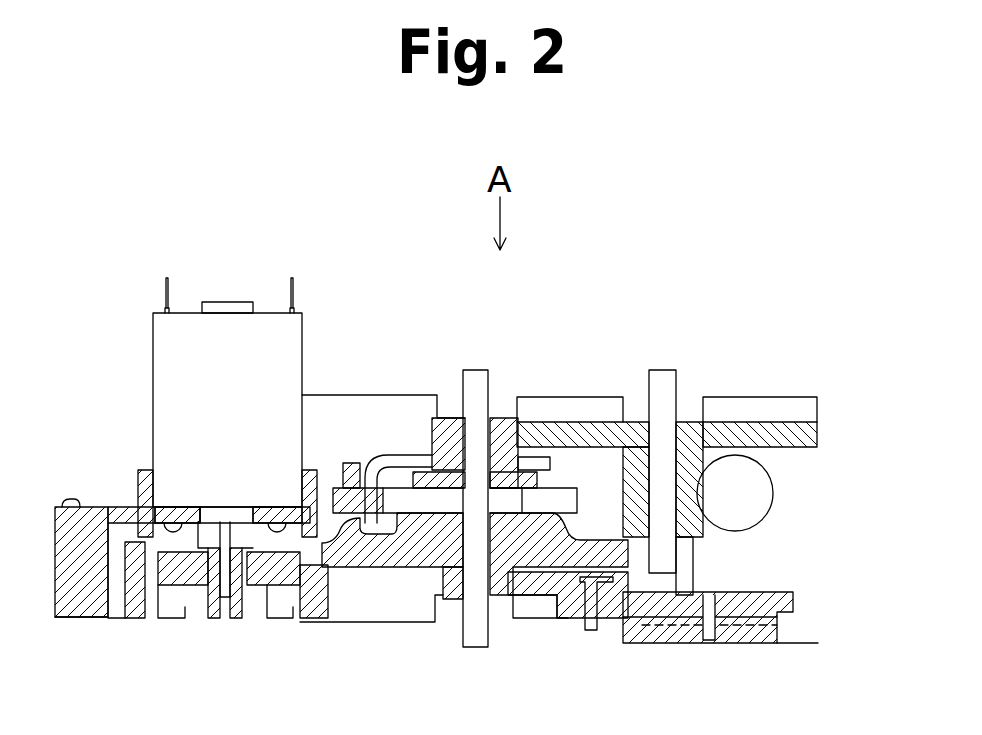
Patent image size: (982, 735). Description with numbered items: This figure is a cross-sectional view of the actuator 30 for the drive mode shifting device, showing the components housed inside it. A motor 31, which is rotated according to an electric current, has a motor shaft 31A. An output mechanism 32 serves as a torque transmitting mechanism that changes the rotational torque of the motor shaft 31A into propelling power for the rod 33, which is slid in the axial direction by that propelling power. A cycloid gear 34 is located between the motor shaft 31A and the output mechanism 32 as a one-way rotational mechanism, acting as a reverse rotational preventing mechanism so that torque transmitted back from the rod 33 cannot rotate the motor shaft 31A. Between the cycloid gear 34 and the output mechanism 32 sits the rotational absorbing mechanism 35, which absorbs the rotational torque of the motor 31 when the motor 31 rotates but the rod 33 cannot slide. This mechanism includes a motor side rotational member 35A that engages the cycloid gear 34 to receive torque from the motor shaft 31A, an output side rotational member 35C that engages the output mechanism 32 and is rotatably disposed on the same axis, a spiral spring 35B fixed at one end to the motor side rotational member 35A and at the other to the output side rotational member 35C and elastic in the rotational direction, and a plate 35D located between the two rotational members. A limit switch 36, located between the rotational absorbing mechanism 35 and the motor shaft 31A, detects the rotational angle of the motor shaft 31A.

The actuator 30 is at (534, 347).
The motor 31 is at (287, 364).
The motor shaft 31A is at (225, 506).
The output mechanism 32 is at (738, 412).
The rod 33 is at (755, 492).
The cycloid gear 34 is at (198, 606).
The rotational absorbing mechanism 35 is at (419, 437).
The motor side rotational member 35A is at (392, 573).
The spiral spring 35B is at (577, 503).
The output side rotational member 35C is at (452, 418).
The plate 35D is at (547, 476).
The limit switch 36 is at (816, 614).